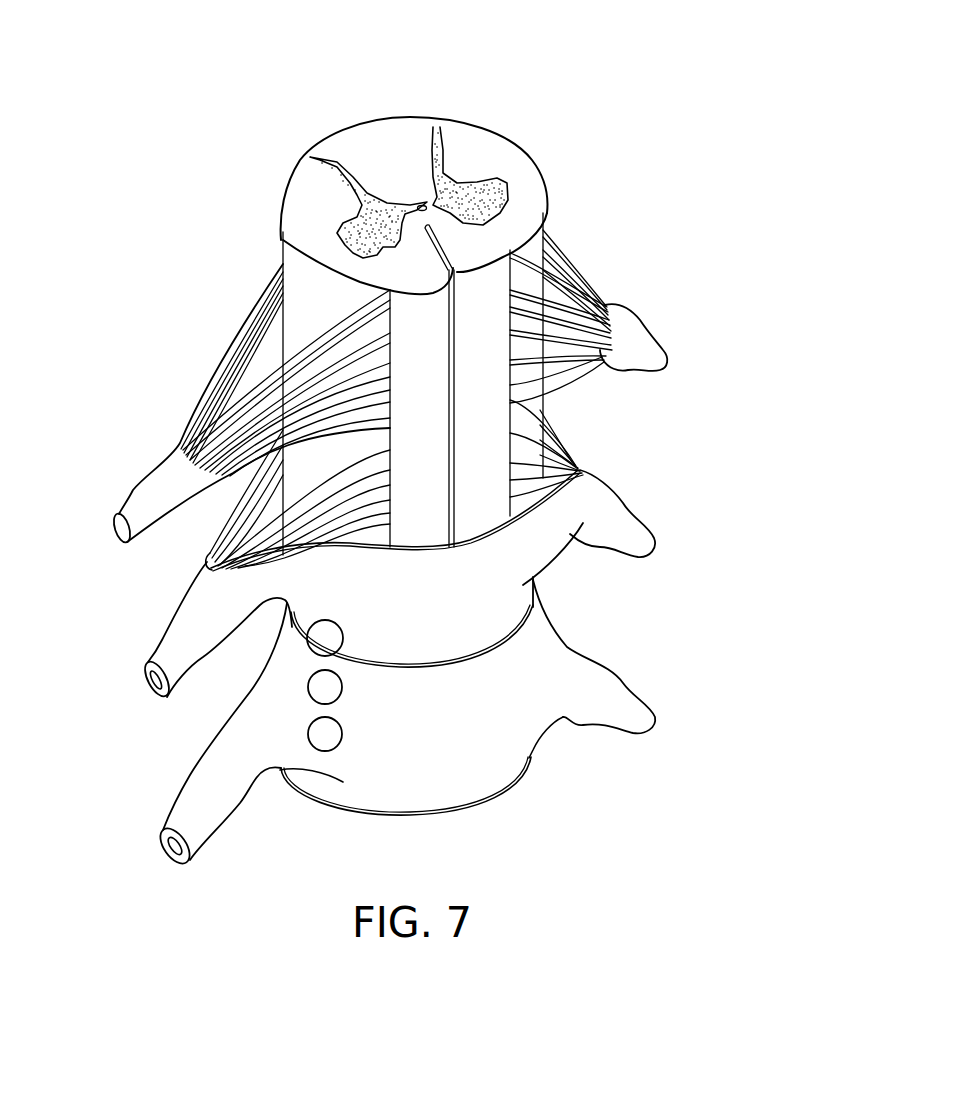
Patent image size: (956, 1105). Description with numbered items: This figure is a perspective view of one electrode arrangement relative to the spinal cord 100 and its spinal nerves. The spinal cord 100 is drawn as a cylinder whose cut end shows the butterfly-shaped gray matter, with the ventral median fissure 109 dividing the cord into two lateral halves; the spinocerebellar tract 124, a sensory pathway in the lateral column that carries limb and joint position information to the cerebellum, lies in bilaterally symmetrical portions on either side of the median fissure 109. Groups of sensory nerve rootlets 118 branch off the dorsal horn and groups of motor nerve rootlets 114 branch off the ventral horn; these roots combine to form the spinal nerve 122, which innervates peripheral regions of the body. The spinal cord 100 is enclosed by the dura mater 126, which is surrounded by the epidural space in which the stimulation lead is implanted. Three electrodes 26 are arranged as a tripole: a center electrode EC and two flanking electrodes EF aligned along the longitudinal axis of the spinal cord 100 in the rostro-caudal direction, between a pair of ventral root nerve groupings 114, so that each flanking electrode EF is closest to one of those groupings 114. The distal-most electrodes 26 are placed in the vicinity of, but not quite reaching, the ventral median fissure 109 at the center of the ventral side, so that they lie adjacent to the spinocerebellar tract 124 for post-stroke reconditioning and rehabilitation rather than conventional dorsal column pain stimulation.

The spinal cord 100 is at (487, 92).
The spinocerebellar tract 124 is at (535, 186).
The ventral median fissure 109 is at (447, 240).
The sensory nerve rootlets 118 is at (267, 324).
The motor nerve rootlets 114 is at (268, 358).
The spinal nerve 122 is at (116, 522).
The dura mater 126 is at (475, 733).
The electrodes 26 is at (278, 694).
The flanking electrodes EF is at (342, 636).
The center electrode EC is at (337, 698).